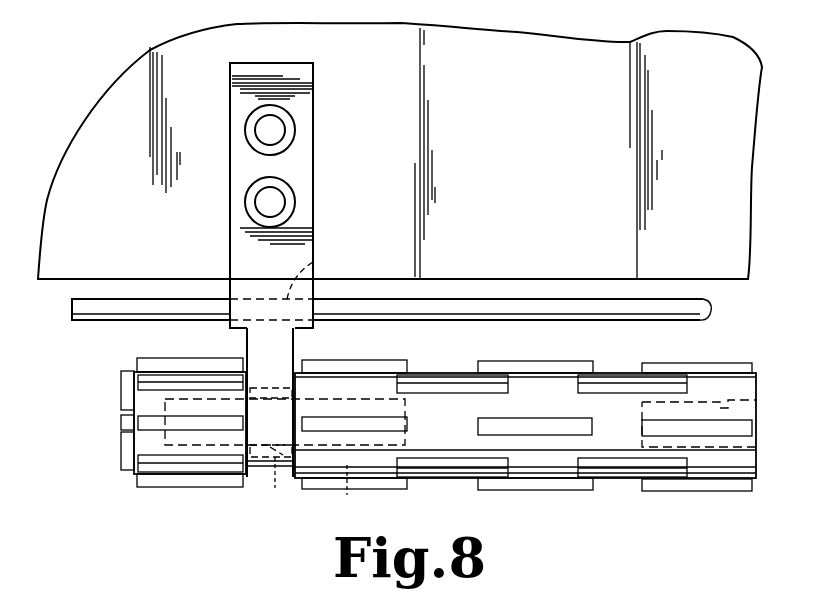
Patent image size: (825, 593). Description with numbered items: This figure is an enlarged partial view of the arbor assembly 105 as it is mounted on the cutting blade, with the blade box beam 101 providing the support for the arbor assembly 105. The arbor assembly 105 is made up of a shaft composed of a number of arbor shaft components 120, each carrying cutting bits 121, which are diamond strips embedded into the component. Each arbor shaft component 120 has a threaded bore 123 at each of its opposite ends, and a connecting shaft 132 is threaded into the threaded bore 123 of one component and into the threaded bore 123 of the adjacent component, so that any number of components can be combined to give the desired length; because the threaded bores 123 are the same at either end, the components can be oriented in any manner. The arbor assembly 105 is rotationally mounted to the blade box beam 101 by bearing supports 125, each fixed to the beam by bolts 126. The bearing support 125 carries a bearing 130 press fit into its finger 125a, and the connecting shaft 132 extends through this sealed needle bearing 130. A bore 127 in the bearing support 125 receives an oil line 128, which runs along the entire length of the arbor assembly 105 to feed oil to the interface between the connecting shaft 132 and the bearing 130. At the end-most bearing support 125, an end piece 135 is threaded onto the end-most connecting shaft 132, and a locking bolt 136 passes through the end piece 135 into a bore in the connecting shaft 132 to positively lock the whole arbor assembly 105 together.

The blade box beam 101 is at (548, 146).
The arbor assembly 105 is at (688, 492).
The arbor shaft component 120 is at (542, 460).
The cutting bits 121 is at (407, 423).
The threaded bore 123 is at (352, 402).
The bearing support 125 is at (314, 173).
The finger 125a is at (258, 352).
The bolts 126 is at (296, 133).
The bore 127 is at (313, 262).
The oil line 128 is at (705, 300).
The bearing 130 is at (271, 447).
The connecting shaft 132 is at (346, 493).
The end piece 135 is at (166, 482).
The locking bolt 136 is at (120, 423).